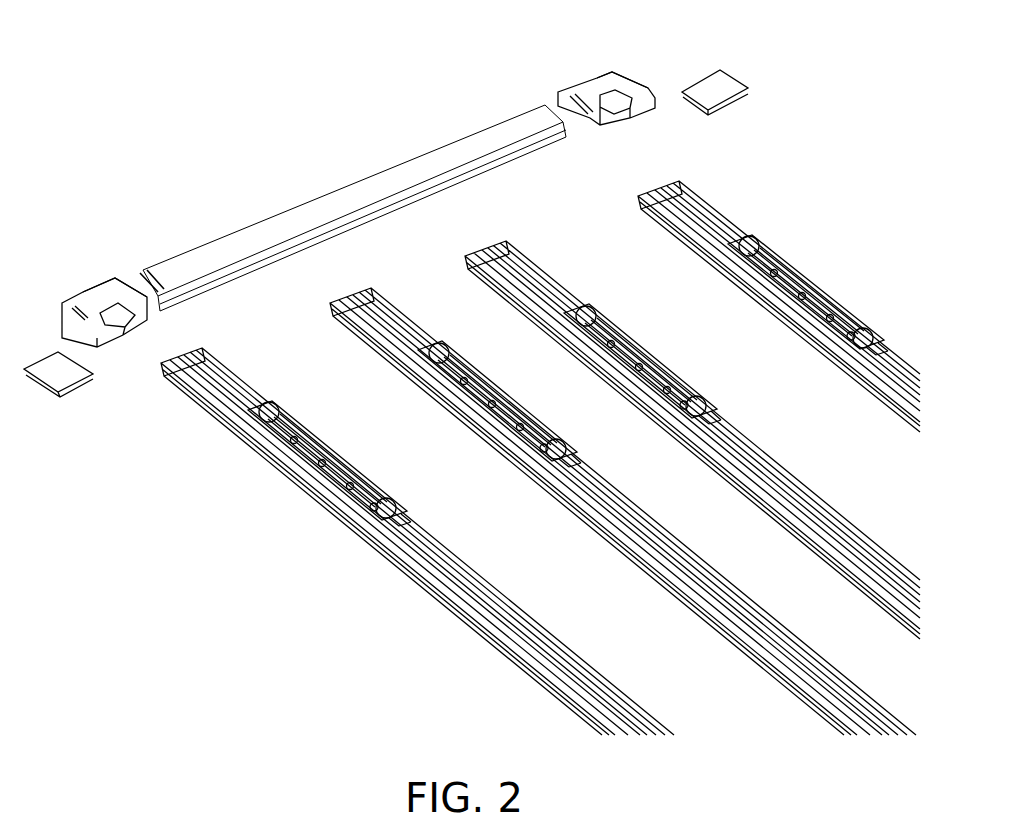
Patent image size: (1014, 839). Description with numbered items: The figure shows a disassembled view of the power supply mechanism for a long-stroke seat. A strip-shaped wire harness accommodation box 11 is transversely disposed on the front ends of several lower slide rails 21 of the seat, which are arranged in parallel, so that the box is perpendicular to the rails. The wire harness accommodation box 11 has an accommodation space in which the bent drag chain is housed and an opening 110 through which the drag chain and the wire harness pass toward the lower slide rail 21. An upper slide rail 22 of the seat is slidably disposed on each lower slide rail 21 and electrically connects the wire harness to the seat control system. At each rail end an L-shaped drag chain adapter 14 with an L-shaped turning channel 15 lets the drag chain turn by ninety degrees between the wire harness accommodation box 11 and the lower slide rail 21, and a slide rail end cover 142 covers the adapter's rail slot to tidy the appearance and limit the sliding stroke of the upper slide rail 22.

The wire harness accommodation box 11 is at (352, 193).
The opening 110 is at (143, 280).
The drag chain adapter 14 is at (590, 92).
The turning channel 15 is at (619, 80).
The slide rail end cover 142 is at (707, 86).
The lower slide rail 21 is at (698, 203).
The upper slide rail 22 is at (772, 252).